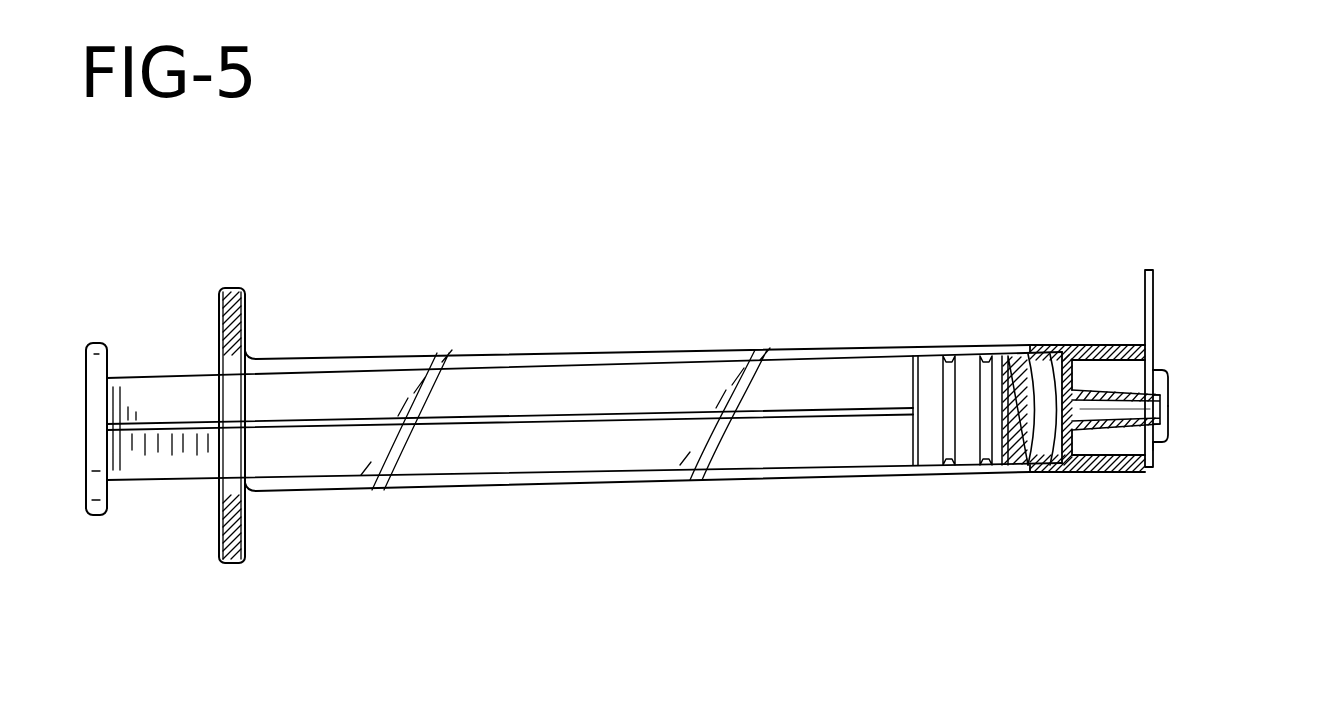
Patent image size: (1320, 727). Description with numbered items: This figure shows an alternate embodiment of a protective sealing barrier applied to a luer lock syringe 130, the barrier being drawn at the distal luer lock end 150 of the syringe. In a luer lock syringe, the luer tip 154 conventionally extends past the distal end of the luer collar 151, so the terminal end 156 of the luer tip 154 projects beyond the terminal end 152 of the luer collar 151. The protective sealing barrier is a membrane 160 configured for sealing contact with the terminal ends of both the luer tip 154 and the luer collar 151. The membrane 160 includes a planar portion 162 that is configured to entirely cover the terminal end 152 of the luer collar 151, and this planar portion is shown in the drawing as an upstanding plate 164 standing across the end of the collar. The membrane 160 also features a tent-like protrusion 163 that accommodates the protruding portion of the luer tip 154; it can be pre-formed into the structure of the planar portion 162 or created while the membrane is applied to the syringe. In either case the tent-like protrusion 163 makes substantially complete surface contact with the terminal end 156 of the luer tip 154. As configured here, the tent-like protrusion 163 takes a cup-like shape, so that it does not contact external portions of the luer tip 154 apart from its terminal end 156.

The syringe 130 is at (695, 553).
The luer lock hub 150 is at (1072, 406).
The luer collar 151 is at (1082, 350).
The terminal end of luer collar 152 is at (1143, 350).
The luer tip 154 is at (1104, 385).
The terminal end of luer tip 156 is at (1157, 443).
The membrane 160 is at (1229, 361).
The planar portion 162 is at (1168, 376).
The tent-like protrusion 163 is at (1170, 420).
The cap flange 164 is at (1147, 270).